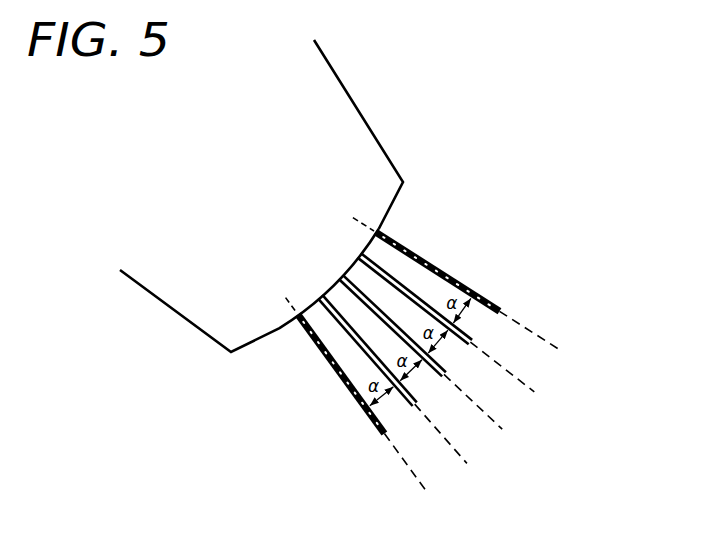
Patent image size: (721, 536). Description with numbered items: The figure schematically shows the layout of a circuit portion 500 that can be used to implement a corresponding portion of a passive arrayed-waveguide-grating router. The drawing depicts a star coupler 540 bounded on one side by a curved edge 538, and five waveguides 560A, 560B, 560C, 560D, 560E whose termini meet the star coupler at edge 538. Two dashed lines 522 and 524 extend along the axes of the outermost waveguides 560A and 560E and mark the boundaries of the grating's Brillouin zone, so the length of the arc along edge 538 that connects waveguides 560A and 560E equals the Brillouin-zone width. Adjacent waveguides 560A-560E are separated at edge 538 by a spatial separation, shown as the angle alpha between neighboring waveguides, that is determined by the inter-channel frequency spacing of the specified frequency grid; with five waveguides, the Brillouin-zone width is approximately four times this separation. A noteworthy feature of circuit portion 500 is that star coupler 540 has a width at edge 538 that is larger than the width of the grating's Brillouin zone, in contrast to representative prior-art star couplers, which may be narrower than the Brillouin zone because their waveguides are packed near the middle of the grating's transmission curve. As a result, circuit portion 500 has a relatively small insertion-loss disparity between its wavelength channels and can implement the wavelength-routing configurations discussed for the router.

The circuit portion 500 is at (116, 104).
The star coupler 540 is at (342, 108).
The edge 538 is at (258, 332).
The dashed line 524 is at (352, 217).
The dashed line 522 is at (284, 297).
The waveguide 560A is at (349, 398).
The waveguide 560B is at (418, 402).
The waveguide 560C is at (432, 388).
The waveguide 560D is at (458, 357).
The waveguide 560E is at (443, 270).